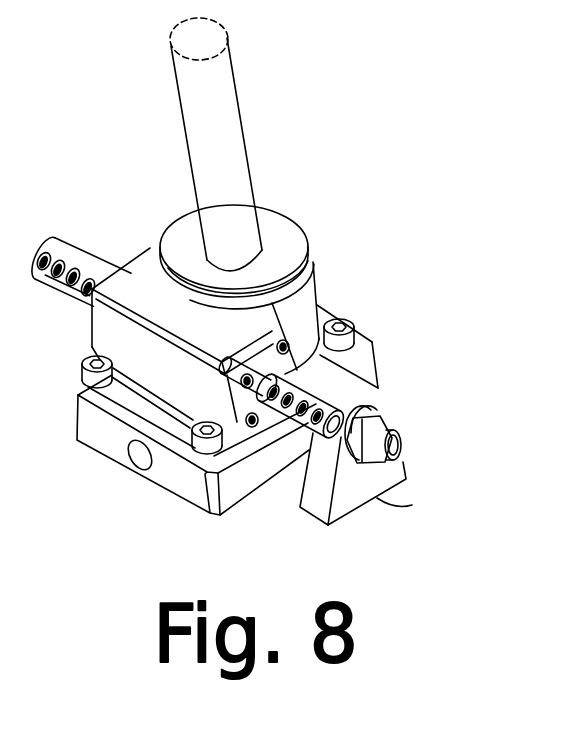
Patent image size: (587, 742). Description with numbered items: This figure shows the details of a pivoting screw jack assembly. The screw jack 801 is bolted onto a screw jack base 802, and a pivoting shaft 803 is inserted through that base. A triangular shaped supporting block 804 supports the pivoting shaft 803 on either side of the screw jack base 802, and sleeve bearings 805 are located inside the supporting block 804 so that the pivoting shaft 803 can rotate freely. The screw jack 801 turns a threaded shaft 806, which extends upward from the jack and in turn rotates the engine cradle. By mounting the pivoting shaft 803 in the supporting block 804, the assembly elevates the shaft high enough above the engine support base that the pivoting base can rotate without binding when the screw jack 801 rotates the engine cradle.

The screw jack 801 is at (320, 281).
The screw jack base 802 is at (378, 370).
The pivoting shaft 803 is at (393, 450).
The triangular shaped supporting block 804 is at (377, 498).
The sleeve bearings 805 is at (385, 419).
The threaded shaft 806 is at (250, 140).